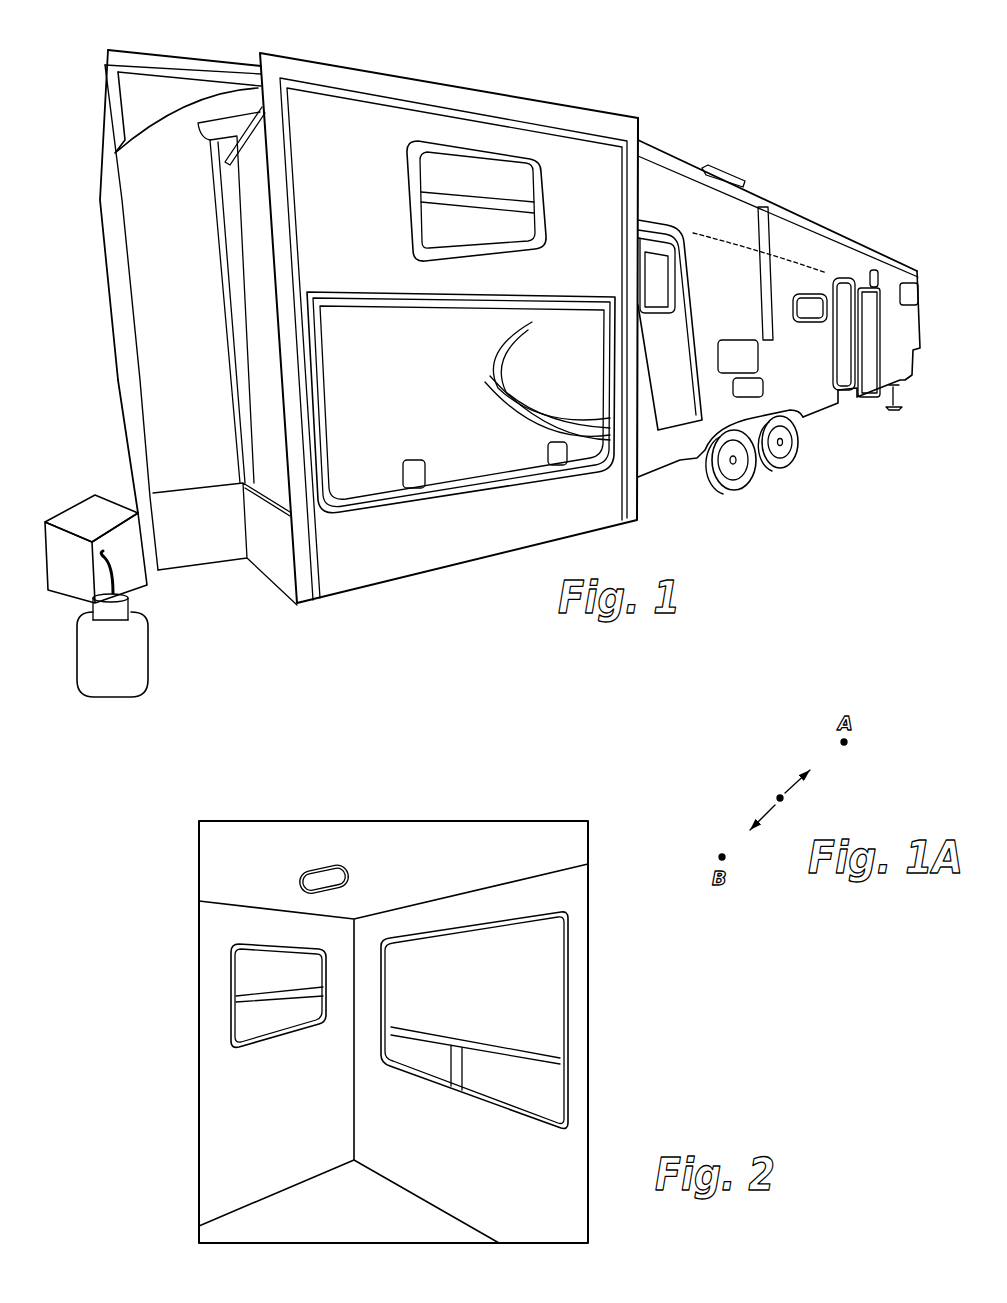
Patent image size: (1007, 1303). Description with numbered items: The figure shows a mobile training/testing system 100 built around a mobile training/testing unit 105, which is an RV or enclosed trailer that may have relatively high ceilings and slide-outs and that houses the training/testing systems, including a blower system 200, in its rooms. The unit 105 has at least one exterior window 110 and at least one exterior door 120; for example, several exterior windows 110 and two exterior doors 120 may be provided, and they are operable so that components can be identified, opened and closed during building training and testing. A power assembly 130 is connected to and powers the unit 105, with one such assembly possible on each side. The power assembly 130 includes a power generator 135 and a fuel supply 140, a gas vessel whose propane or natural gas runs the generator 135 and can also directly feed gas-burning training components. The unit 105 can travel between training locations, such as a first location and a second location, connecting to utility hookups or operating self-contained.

In FIG. 1, the mobile training/testing system 100 is at (794, 85).
In FIG. 1, the mobile training/testing unit 105 is at (645, 133).
In FIG. 1A, the mobile training/testing unit 105 is at (778, 783).
In FIG. 1, the exterior window 110 is at (452, 128).
In FIG. 2, the exterior window 110 is at (512, 1130).
In FIG. 1, the exterior door 120 is at (673, 213).
In FIG. 1, the power assembly 130 is at (139, 545).
In FIG. 1, the power generator 135 is at (102, 486).
In FIG. 1, the fuel supply 140 is at (127, 700).
In FIG. 1, the blower system 200 is at (850, 275).